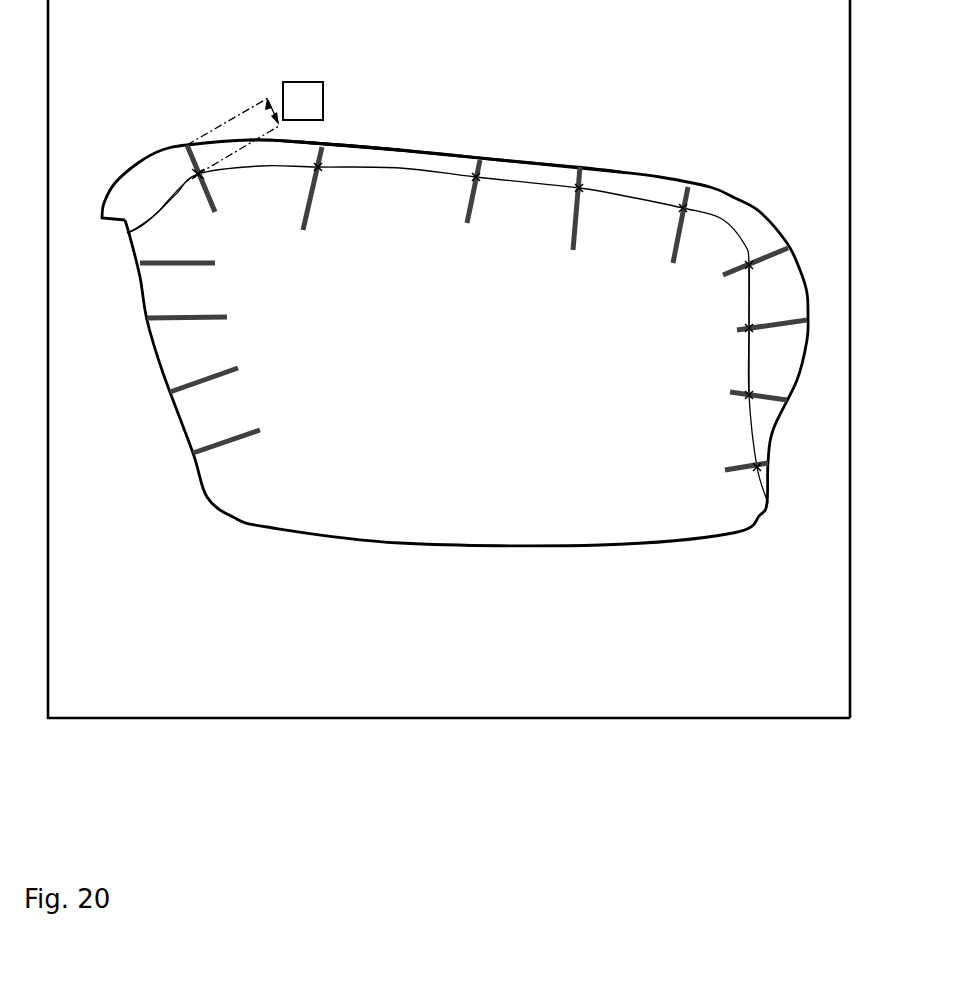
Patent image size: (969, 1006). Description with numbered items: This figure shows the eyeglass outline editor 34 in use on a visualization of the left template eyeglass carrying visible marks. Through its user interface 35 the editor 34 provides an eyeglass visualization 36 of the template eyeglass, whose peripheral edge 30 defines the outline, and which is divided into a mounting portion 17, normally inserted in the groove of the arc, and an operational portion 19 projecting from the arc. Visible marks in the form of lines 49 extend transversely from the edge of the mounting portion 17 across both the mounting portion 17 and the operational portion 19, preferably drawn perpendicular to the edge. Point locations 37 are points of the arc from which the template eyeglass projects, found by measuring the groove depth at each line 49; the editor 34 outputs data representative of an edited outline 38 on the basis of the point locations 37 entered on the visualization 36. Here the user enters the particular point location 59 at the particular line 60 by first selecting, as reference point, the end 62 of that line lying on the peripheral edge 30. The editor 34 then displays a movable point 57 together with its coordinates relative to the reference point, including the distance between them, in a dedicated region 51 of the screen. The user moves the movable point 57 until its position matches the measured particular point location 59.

The mounting portion 17 is at (430, 164).
The operational portion 19 is at (527, 220).
The peripheral edge 30 is at (338, 142).
The eyeglass outline editor 34 is at (710, 728).
The user interface 35 is at (850, 613).
The eyeglass visualization 36 is at (337, 585).
The point locations 37 is at (198, 174).
The edited outline 38 is at (750, 285).
The lines 49 is at (193, 383).
The dedicated region 51 is at (303, 82).
The movable point 57 is at (126, 233).
The particular point location 59 is at (198, 175).
The particular line 60 is at (198, 174).
The end of the particular line 62 is at (198, 174).